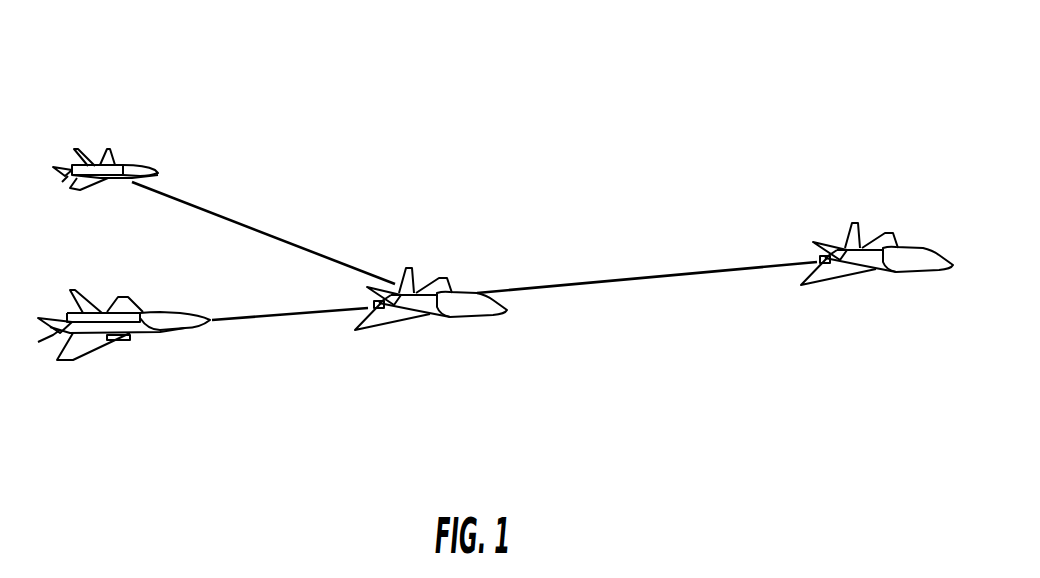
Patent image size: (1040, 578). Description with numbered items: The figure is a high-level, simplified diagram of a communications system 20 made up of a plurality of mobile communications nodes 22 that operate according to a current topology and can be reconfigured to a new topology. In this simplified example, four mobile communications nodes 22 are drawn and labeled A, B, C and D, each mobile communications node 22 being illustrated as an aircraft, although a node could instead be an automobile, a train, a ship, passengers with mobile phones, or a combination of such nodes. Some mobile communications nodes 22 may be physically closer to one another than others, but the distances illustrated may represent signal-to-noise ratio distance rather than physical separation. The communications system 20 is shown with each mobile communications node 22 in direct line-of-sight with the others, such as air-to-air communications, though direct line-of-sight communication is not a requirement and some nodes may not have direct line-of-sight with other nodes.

The communications system 20 is at (574, 69).
The mobile communications node 22 is at (495, 257).
The mobile communications node A is at (431, 313).
The mobile communications node B is at (105, 153).
The mobile communications node C is at (124, 335).
The mobile communications node D is at (877, 268).